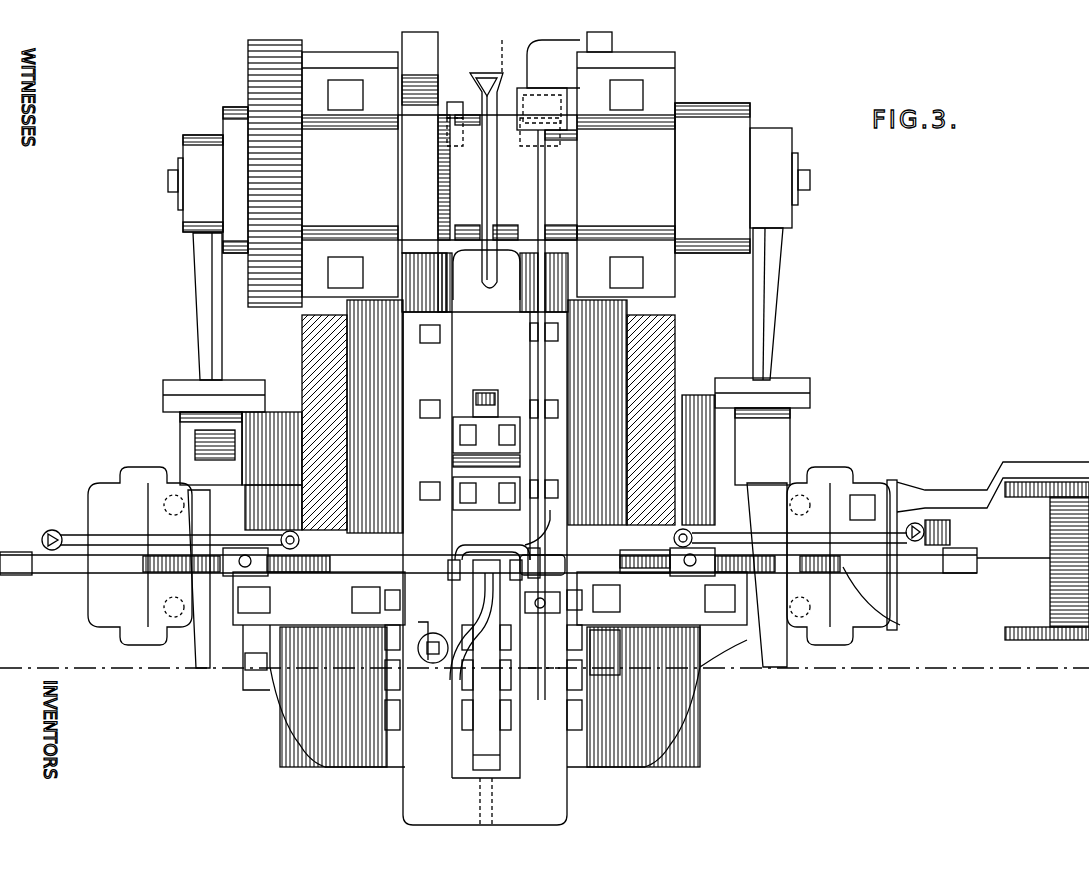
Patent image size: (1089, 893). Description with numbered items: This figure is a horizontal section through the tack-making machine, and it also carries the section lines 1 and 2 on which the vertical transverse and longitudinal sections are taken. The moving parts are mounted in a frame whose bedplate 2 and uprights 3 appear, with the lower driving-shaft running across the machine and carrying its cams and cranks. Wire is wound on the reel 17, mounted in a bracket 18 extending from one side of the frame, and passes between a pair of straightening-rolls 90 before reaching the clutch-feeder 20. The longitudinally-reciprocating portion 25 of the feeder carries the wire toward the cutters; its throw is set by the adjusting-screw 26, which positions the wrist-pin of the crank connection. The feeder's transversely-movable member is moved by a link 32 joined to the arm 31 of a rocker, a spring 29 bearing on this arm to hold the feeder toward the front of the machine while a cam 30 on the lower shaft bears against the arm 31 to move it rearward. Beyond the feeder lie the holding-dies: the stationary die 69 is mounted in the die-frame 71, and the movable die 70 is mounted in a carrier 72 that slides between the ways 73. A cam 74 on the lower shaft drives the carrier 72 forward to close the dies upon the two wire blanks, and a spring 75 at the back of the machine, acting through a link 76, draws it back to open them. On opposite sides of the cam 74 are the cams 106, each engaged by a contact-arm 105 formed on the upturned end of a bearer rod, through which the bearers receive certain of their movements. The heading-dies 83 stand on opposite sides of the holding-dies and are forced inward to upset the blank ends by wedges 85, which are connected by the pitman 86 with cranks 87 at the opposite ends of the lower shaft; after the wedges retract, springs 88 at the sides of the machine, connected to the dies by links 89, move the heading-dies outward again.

The section line 1 1 is at (544, 669).
The bedplate 2 is at (418, 429).
The uprights 3 is at (302, 348).
The reel 17 is at (1005, 634).
The bracket 18 is at (1003, 468).
The clutch-feeder 20 is at (490, 598).
The longitudinally-reciprocating portion of the feeder 25 is at (535, 613).
The adjusting-screw 26 is at (540, 530).
The spring 29 is at (553, 64).
The cam 30 is at (555, 178).
The arm of rocker 31 is at (542, 109).
The link 32 is at (540, 320).
The stationary die 69 is at (486, 481).
The movable die 70 is at (486, 665).
The die-frame 71 is at (483, 568).
The carrier 72 is at (483, 388).
The ways 73 is at (470, 435).
The cam 74 is at (493, 195).
The spring 75 is at (485, 72).
The link 76 is at (493, 176).
The heading-dies 83 is at (465, 575).
The wedges 85 is at (196, 655).
The pitman 86 is at (200, 313).
The cranks 87 is at (168, 181).
The springs 88 is at (52, 530).
The links 89 is at (113, 530).
The straightening-rolls 90 is at (900, 625).
The contact-arm 105 is at (452, 102).
The cam 106 is at (455, 162).